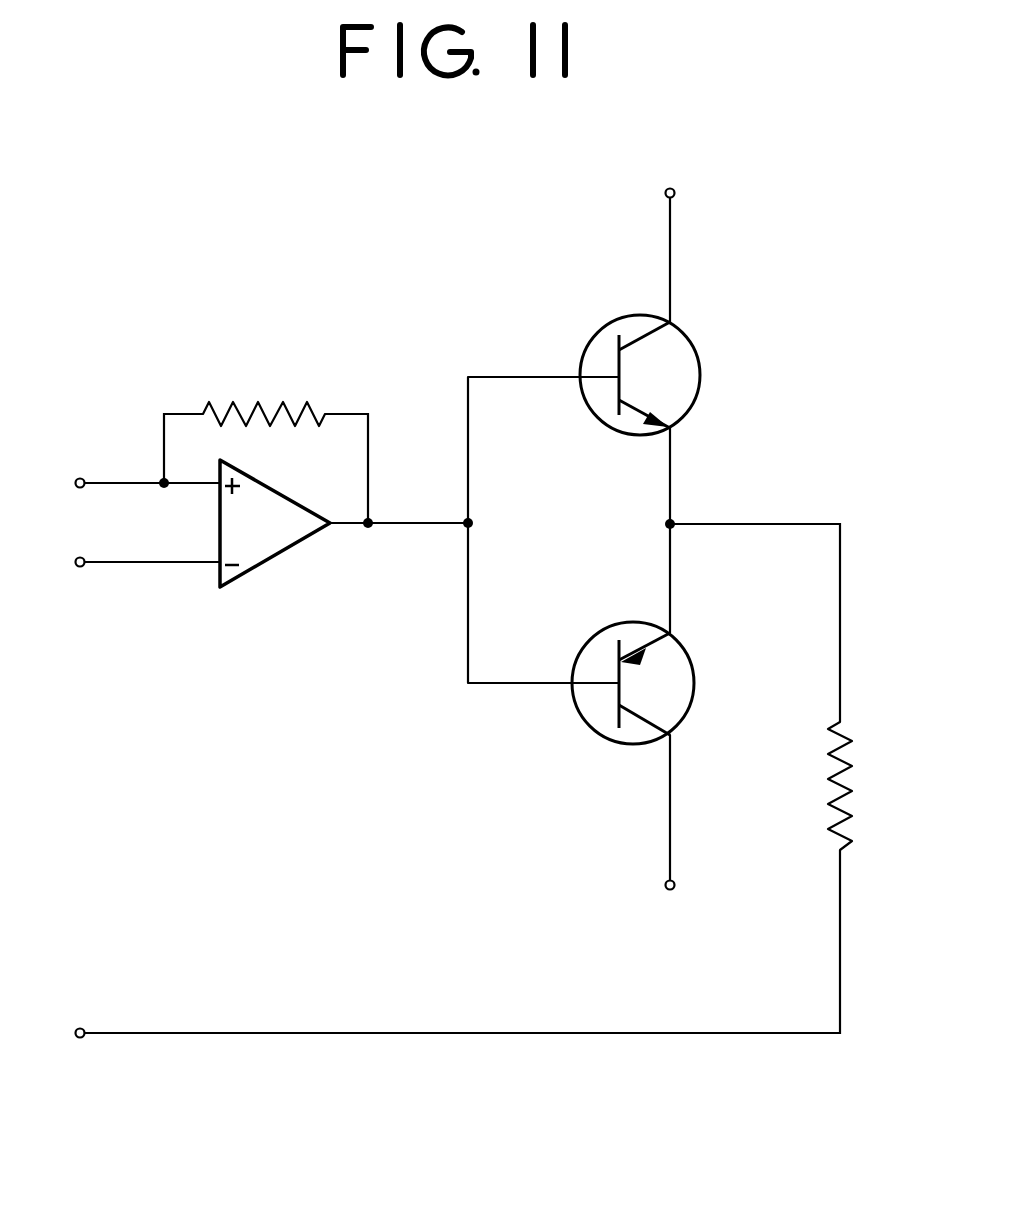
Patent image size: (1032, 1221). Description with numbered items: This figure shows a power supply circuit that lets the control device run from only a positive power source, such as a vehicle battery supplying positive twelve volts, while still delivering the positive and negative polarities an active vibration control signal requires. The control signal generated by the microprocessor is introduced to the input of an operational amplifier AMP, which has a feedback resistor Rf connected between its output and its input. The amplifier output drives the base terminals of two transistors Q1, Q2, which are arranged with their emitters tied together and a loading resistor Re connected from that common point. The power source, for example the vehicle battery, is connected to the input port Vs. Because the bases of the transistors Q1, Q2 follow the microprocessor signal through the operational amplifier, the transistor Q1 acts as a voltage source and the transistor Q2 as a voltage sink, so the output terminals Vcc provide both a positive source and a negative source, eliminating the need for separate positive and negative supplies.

The resistor feedback Rf is at (264, 384).
The loading resistor Re is at (868, 786).
The transistor Q1 is at (743, 376).
The transistor Q2 is at (662, 683).
The output terminals Vcc is at (650, 542).
The input port Vs is at (74, 1005).